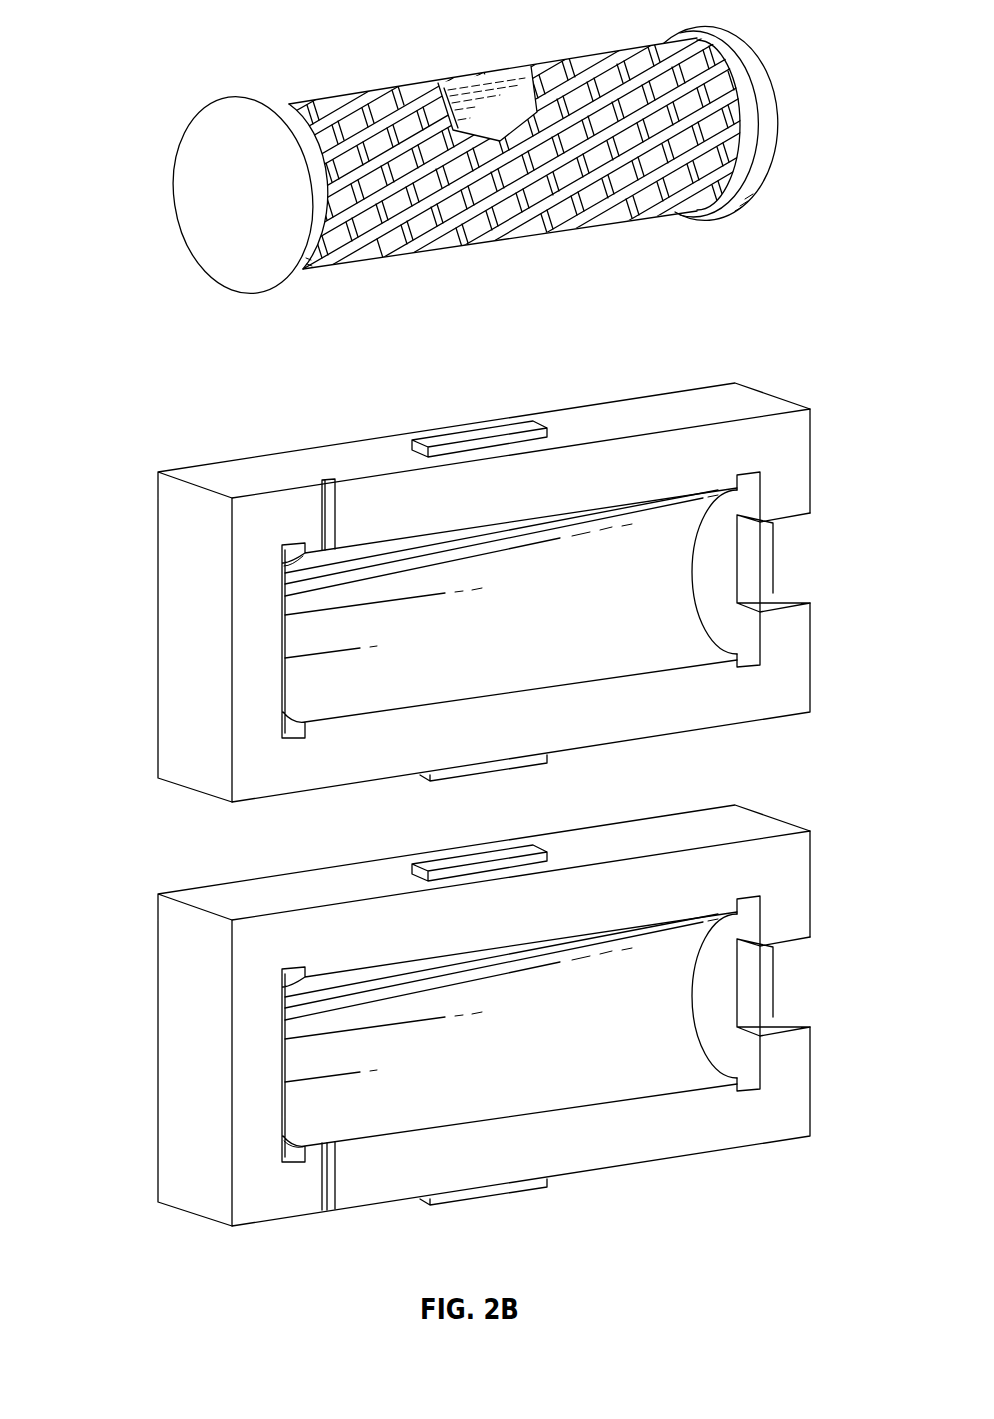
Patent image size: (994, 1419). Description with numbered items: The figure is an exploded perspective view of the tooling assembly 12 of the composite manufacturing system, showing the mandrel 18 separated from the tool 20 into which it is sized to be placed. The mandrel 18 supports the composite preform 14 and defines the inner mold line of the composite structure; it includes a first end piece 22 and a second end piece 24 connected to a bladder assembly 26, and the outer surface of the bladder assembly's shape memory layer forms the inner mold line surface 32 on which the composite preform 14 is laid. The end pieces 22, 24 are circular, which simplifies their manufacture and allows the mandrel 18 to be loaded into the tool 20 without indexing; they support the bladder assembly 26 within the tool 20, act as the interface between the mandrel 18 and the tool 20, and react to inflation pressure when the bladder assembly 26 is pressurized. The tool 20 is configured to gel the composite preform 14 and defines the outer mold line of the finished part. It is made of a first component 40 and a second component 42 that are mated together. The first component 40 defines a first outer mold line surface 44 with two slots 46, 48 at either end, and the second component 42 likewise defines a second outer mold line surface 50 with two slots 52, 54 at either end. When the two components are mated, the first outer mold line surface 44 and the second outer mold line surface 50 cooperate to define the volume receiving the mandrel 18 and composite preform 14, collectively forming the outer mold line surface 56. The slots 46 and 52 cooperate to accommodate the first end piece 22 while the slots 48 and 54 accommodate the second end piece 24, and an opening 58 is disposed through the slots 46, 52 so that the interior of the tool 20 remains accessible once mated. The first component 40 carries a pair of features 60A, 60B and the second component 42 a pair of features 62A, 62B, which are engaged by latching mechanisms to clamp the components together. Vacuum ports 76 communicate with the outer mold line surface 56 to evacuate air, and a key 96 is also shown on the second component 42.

The tooling assembly 12 is at (852, 20).
The composite preform 14 is at (340, 93).
The mandrel 18 is at (170, 33).
The tool 20 is at (124, 423).
The first end piece 22 is at (778, 92).
The second end piece 24 is at (243, 197).
The bladder assembly 26 is at (510, 74).
The inner mold line surface 32 is at (452, 73).
The first component 40 is at (573, 723).
The second component 42 is at (573, 1147).
The first outer mold line surface 44 is at (527, 560).
The slot 46 is at (747, 488).
The slot 48 is at (291, 547).
The second outer mold line surface 50 is at (593, 1073).
The slot 52 is at (740, 1090).
The slot 54 is at (288, 1162).
The outer mold line surface 56 is at (577, 593).
The opening 58 is at (790, 598).
The feature 60A is at (483, 445).
The feature 60B is at (447, 782).
The feature 62A is at (487, 1204).
The feature 62B is at (485, 865).
The vacuum port 76 is at (320, 495).
The key 96 is at (336, 1195).